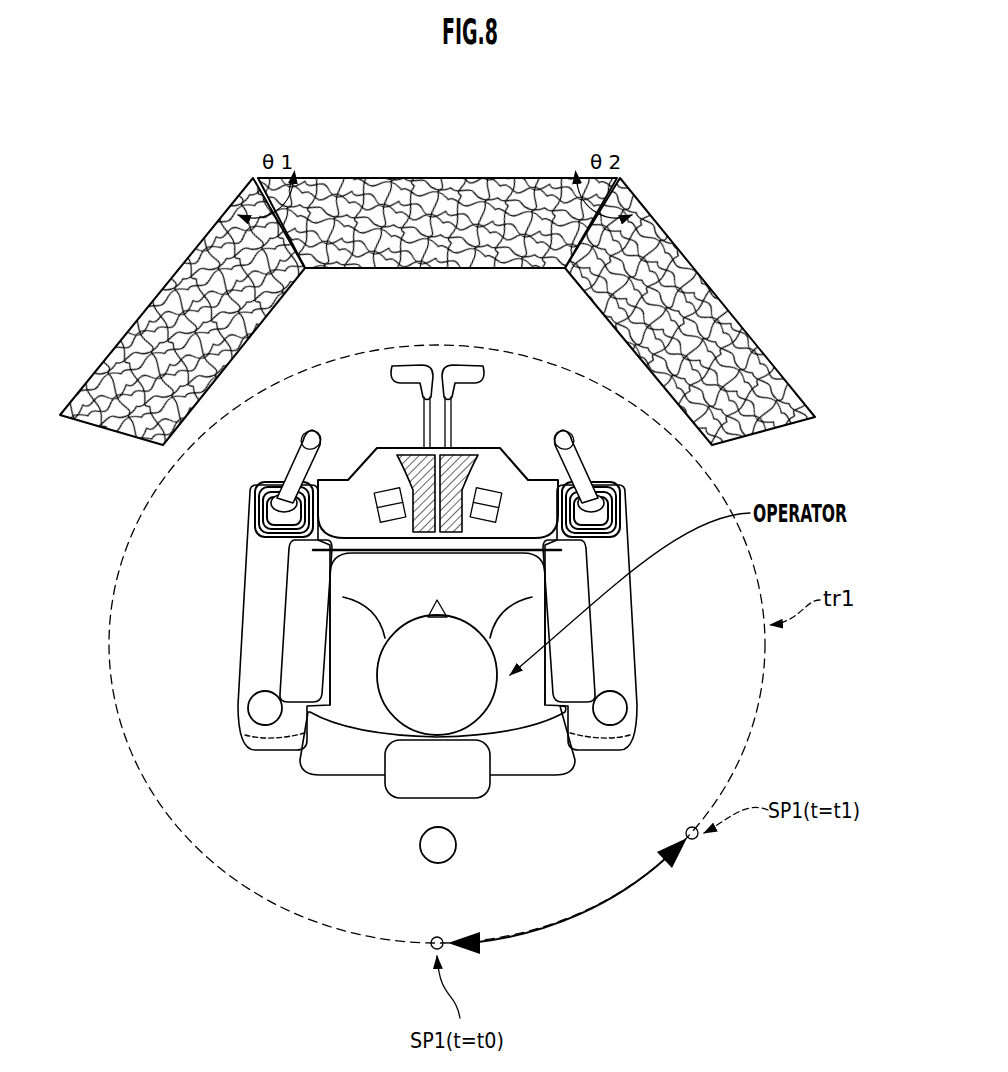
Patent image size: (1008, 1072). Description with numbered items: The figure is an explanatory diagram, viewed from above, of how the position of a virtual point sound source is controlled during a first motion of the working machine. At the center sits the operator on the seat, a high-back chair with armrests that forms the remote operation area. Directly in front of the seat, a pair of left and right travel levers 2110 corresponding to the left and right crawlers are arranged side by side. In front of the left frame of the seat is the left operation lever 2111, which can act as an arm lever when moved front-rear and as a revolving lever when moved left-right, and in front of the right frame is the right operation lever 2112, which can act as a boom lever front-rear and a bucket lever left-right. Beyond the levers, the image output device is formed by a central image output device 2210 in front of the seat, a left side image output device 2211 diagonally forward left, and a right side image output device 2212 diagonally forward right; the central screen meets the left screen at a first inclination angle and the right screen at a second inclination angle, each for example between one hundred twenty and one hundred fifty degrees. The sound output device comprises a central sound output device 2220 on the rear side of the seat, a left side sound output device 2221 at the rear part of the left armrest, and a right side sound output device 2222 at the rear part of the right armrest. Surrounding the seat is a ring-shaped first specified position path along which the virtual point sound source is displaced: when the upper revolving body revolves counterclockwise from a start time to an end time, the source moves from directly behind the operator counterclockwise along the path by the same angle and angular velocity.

The travel levers 2110 is at (437, 536).
The left operation lever 2111 is at (309, 424).
The right operation lever 2112 is at (564, 424).
The central image output device 2210 is at (428, 157).
The left side image output device 2211 is at (160, 276).
The right side image output device 2212 is at (718, 266).
The central sound output device 2220 is at (417, 845).
The left side sound output device 2221 is at (240, 710).
The right side sound output device 2222 is at (635, 710).